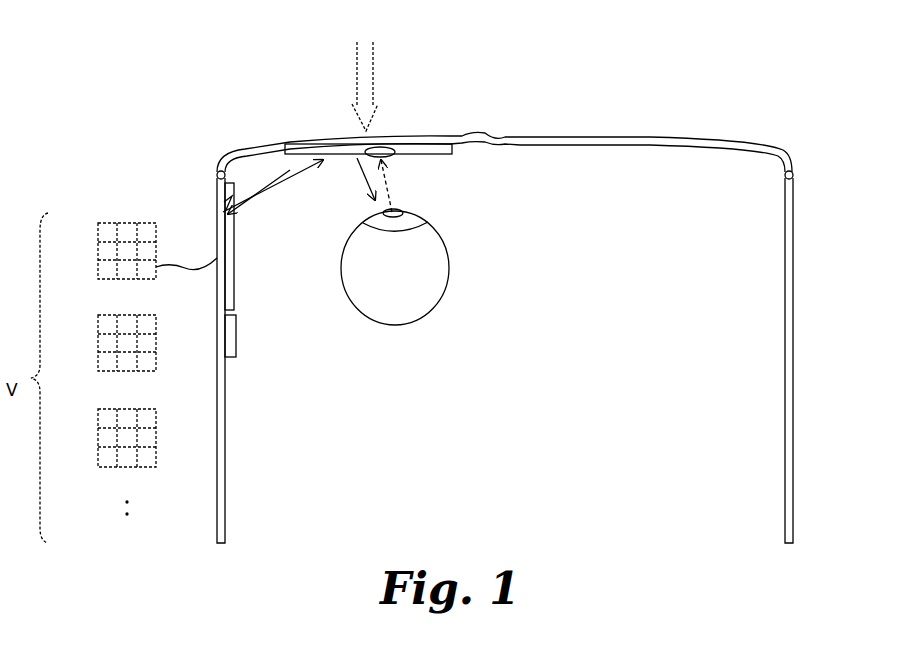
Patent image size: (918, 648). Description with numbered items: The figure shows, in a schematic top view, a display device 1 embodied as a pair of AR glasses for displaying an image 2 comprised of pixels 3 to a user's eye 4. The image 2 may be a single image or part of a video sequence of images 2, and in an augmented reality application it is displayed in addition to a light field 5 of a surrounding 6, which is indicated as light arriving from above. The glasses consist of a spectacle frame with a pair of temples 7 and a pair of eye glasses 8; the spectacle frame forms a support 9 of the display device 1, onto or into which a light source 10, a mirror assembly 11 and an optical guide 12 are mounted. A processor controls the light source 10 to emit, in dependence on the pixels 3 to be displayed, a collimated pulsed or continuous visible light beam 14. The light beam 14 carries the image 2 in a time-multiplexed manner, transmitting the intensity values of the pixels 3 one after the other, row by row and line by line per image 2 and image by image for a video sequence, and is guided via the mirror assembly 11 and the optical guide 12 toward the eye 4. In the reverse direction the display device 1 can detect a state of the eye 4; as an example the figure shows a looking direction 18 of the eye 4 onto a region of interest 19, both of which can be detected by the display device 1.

The display device 1 is at (380, 347).
The image 2 is at (97, 267).
The pixels 3 is at (145, 232).
The user's eye 4 is at (443, 268).
The light field 5 is at (365, 77).
The surrounding 6 is at (369, 25).
The temples 7 is at (222, 403).
The eye glasses 8 is at (318, 141).
The support 9 is at (802, 185).
The light source 10 is at (232, 332).
The mirror assembly 11 is at (228, 193).
The optical guide 12 is at (432, 148).
The visible light beam 14 is at (362, 182).
The looking direction 18 is at (386, 180).
The region of interest 19 is at (387, 148).